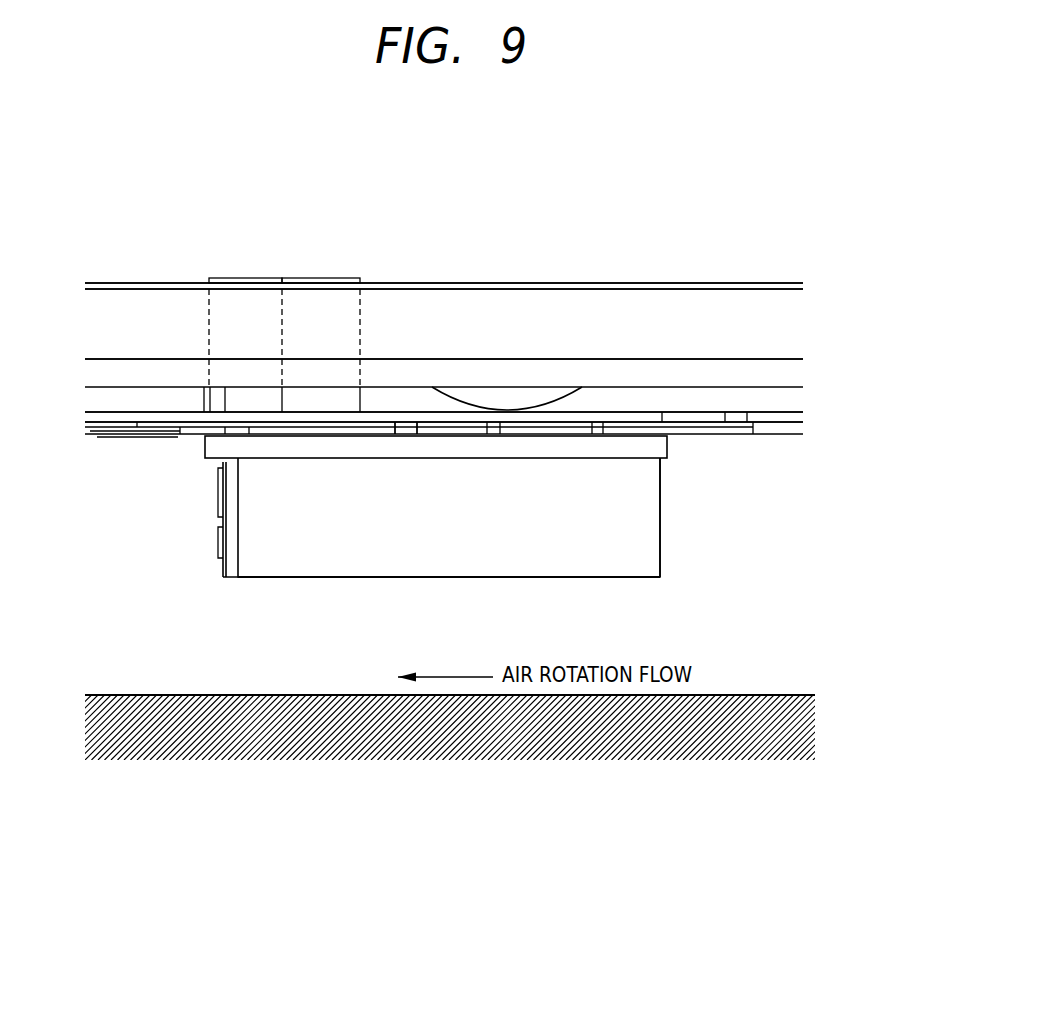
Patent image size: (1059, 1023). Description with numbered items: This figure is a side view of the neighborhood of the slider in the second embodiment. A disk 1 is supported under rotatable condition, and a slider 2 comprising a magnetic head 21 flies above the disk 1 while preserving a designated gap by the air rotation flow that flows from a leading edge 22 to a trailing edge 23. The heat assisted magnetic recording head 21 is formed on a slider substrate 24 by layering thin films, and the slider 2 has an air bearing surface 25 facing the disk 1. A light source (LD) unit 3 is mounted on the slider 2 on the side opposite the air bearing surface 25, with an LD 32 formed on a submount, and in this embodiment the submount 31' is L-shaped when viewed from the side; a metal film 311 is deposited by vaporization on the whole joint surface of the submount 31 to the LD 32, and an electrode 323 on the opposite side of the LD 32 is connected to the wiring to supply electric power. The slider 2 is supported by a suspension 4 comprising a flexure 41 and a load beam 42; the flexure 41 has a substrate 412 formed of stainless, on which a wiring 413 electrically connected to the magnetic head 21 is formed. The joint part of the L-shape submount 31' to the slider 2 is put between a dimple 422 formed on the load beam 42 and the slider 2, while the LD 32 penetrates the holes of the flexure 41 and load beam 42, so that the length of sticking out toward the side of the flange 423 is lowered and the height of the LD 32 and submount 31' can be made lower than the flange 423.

The disk 1 is at (650, 732).
The slider 2 is at (372, 821).
The magnetic head 21 is at (233, 567).
The leading edge 22 is at (660, 577).
The trailing edge 23 is at (223, 577).
The slider substrate 24 is at (383, 548).
The air bearing surface 25 is at (452, 578).
The light source (LD) unit 3 is at (335, 172).
The submount 31 is at (321, 280).
The L-shape submount 31' is at (434, 319).
The metal film 311 is at (317, 395).
The LD (laser diode) 32 is at (256, 278).
The electrode 323 is at (248, 398).
The suspension 4 is at (723, 120).
The flexure 41 is at (763, 410).
The substrate 412 is at (444, 280).
The wiring 413 is at (187, 436).
The load beam 42 is at (690, 372).
The dimple 422 is at (507, 400).
The flange 423 is at (538, 322).